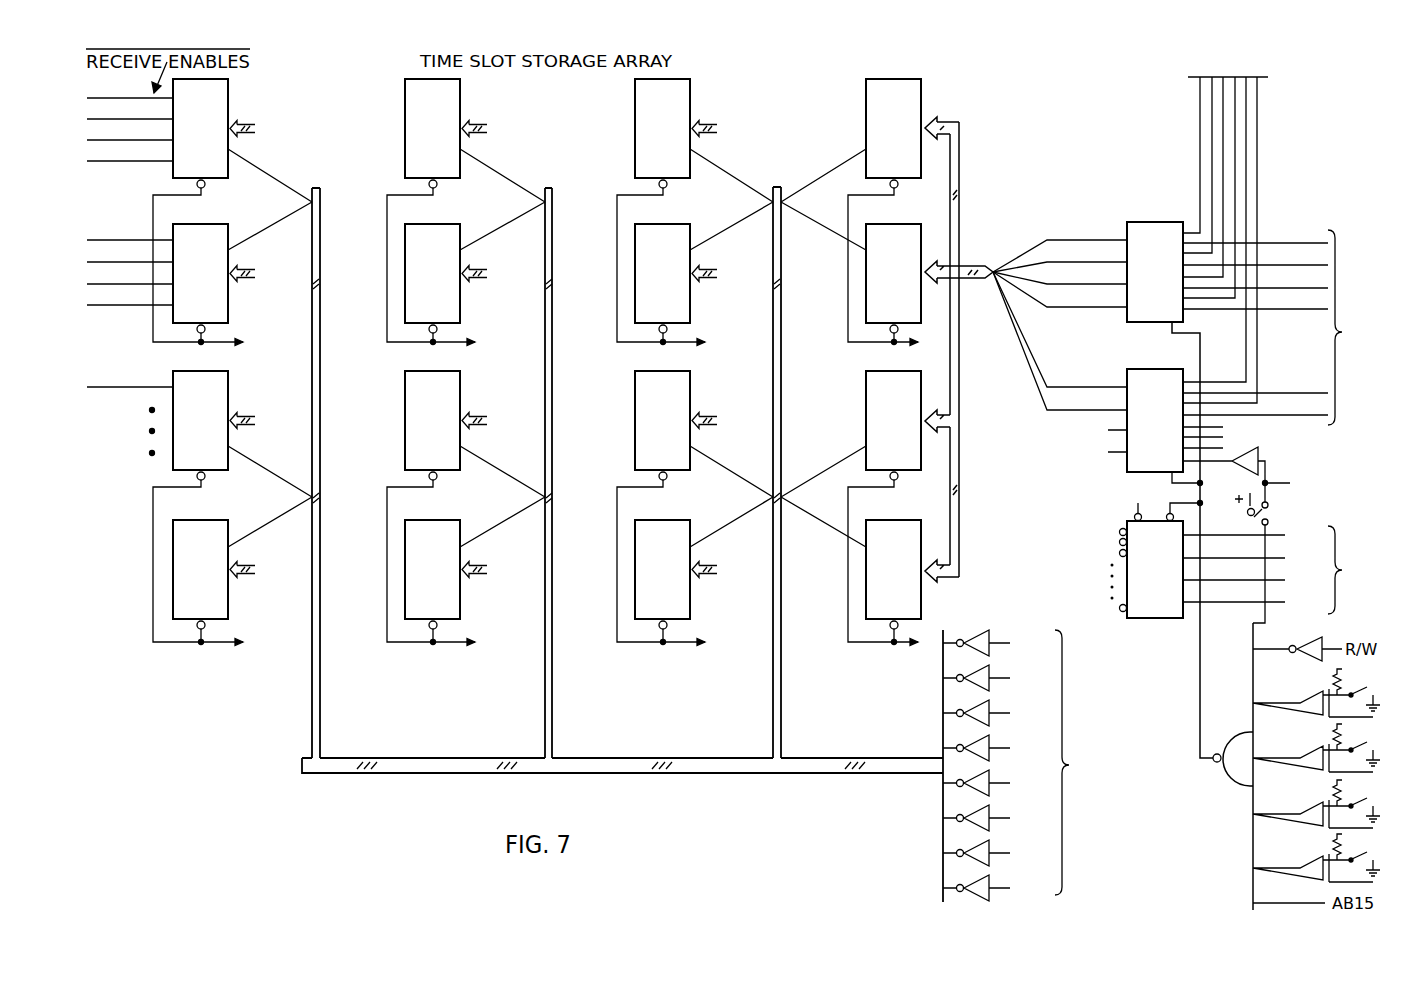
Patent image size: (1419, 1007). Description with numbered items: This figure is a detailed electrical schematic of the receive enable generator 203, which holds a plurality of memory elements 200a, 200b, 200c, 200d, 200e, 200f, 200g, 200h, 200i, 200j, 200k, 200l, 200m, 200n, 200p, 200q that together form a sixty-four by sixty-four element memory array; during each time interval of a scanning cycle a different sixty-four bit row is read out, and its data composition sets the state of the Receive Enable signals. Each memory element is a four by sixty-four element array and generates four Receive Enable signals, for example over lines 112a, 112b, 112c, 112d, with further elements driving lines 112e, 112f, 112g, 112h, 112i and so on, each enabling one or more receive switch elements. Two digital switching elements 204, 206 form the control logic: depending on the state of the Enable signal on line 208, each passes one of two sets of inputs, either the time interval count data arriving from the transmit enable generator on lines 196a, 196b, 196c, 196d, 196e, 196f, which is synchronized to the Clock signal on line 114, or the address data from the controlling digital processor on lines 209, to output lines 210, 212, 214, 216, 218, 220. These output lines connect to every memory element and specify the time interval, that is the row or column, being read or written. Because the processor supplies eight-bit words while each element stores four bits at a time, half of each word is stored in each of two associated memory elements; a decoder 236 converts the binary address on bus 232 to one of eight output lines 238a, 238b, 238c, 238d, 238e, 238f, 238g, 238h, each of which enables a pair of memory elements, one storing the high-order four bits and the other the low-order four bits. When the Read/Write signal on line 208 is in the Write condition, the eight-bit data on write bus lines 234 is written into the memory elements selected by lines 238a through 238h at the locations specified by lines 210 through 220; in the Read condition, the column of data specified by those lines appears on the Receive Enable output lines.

The Receive Enable signal line 112a is at (136, 97).
The Receive Enable signal line 112b is at (136, 118).
The Receive Enable signal line 112c is at (136, 139).
The Receive Enable signal line 112d is at (136, 160).
The Receive Enable signal line 112e is at (136, 239).
The Receive Enable signal line 112f is at (133, 261).
The Receive Enable signal line 112g is at (136, 283).
The Receive Enable signal line 112h is at (136, 304).
The Receive Enable signal line 112i is at (131, 386).
The memory element 200a is at (228, 96).
The memory element 200b is at (228, 306).
The memory element 200c is at (228, 388).
The memory element 200d is at (228, 602).
The memory element 200e is at (460, 96).
The memory element 200f is at (460, 306).
The memory element 200g is at (460, 388).
The memory element 200h is at (460, 602).
The memory element 200i is at (690, 96).
The memory element 200j is at (690, 306).
The memory element 200k is at (690, 388).
The memory element 200l is at (690, 602).
The memory element 200m is at (921, 97).
The memory element 200n is at (866, 307).
The memory element 200p is at (866, 387).
The memory element 200q is at (921, 605).
The decoder output line 238a is at (167, 343).
The decoder output line 238b is at (167, 643).
The decoder output line 238c is at (399, 343).
The decoder output line 238d is at (399, 643).
The decoder output line 238e is at (629, 343).
The decoder output line 238f is at (629, 643).
The decoder output line 238g is at (860, 343).
The decoder output line 238h is at (860, 643).
The receive enable generator 203 is at (276, 706).
The write bus lines 234 is at (683, 745).
The transmit enable generator output line 196a is at (1198, 97).
The transmit enable generator output line 196b is at (1210, 120).
The transmit enable generator output line 196c is at (1221, 143).
The transmit enable generator output line 196d is at (1237, 105).
The transmit enable generator output line 196e is at (1248, 128).
The transmit enable generator output line 196f is at (1259, 151).
The digital switching element 204 is at (1177, 222).
The digital switching element 206 is at (1177, 369).
The processor address lines 209 is at (1280, 327).
The switching element output line 210 is at (1095, 243).
The switching element output line 212 is at (1095, 265).
The switching element output line 214 is at (1095, 287).
The switching element output line 216 is at (1095, 310).
The switching element output line 218 is at (1095, 390).
The switching element output line 220 is at (1095, 413).
The Clock signal line 114 is at (1277, 483).
The memory address bus 232 is at (1280, 570).
The decoder 236 is at (1170, 619).
The Read/Write enable line 208 is at (1200, 696).